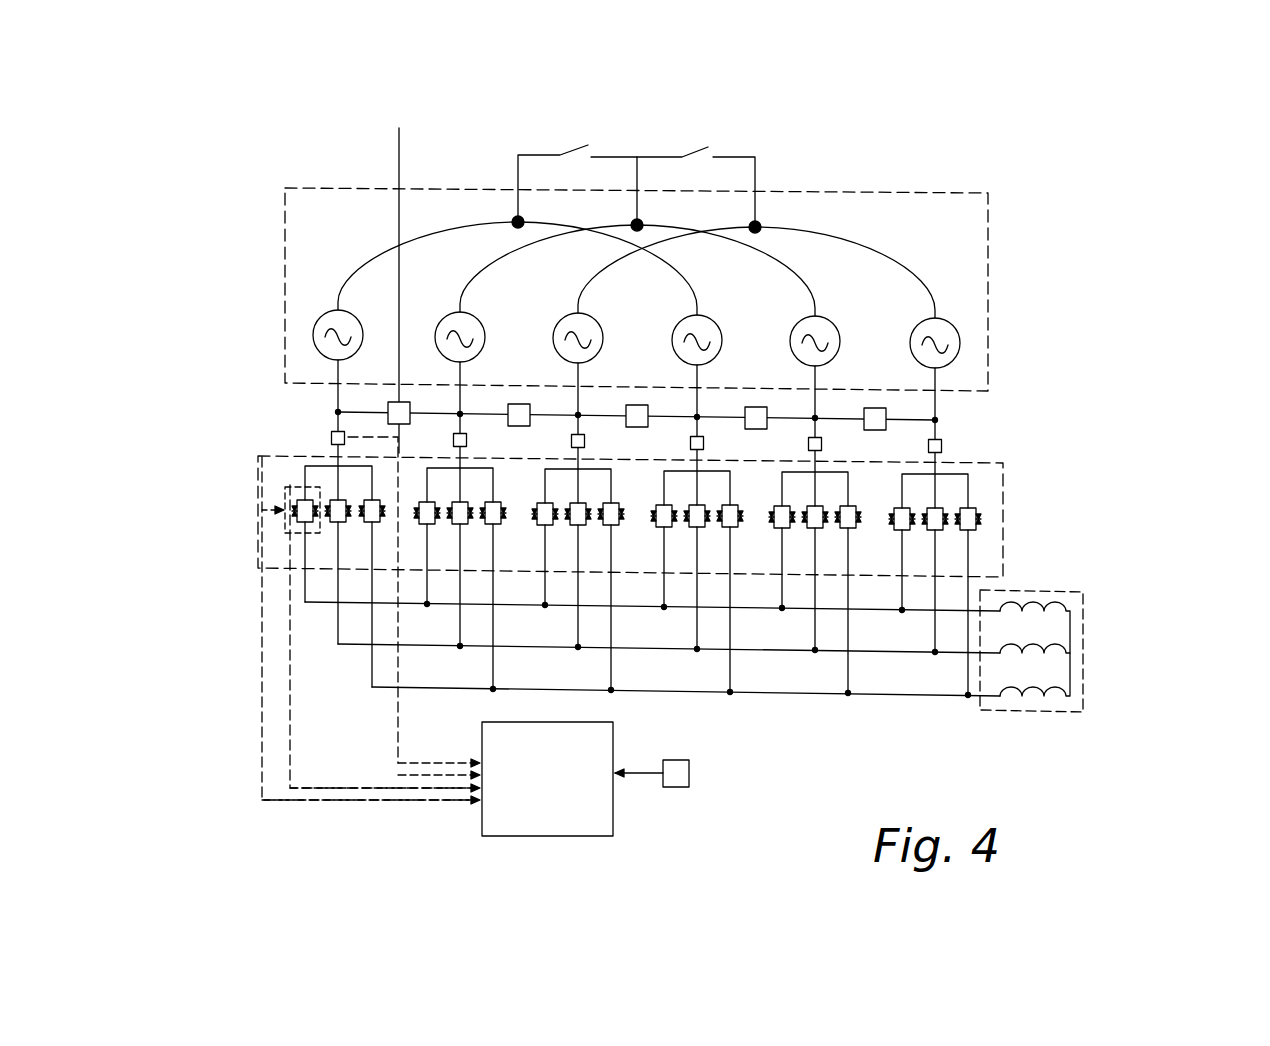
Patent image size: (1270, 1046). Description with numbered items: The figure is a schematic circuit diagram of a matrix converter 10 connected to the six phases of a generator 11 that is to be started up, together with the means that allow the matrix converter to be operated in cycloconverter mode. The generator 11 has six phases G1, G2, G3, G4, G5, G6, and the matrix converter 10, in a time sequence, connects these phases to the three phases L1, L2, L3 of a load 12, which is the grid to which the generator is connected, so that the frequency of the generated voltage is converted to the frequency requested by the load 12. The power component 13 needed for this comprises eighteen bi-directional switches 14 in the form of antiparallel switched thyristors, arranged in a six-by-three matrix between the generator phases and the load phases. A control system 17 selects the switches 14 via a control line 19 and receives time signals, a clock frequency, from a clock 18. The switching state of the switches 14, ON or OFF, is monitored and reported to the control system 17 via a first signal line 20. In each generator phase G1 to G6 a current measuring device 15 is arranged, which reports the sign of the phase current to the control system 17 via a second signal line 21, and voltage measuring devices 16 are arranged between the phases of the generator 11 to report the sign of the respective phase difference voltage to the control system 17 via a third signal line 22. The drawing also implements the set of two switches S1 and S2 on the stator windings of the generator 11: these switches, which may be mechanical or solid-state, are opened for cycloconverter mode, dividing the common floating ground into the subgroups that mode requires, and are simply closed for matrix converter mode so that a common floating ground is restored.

The matrix converter 10 is at (1038, 445).
The generator 11 is at (988, 338).
The load 12 is at (993, 713).
The power component 13 is at (1005, 513).
The bi-directional switch 14 is at (287, 477).
The current measuring device 15 is at (332, 437).
The voltage measuring device 16 is at (637, 234).
The control system 17 is at (547, 779).
The clock 18 is at (682, 788).
The control line 19 is at (262, 740).
The first signal line 20 is at (290, 758).
The second signal line 21 is at (390, 745).
The third signal line 22 is at (397, 700).
The generator phase G1 is at (330, 312).
The generator phase G2 is at (385, 243).
The generator phase G3 is at (520, 262).
The generator phase G4 is at (703, 325).
The generator phase G5 is at (827, 330).
The generator phase G6 is at (937, 330).
The switch S1 is at (577, 163).
The switch S2 is at (696, 165).
The load phase L1 is at (1057, 628).
The load phase L2 is at (1063, 672).
The load phase L3 is at (1057, 713).